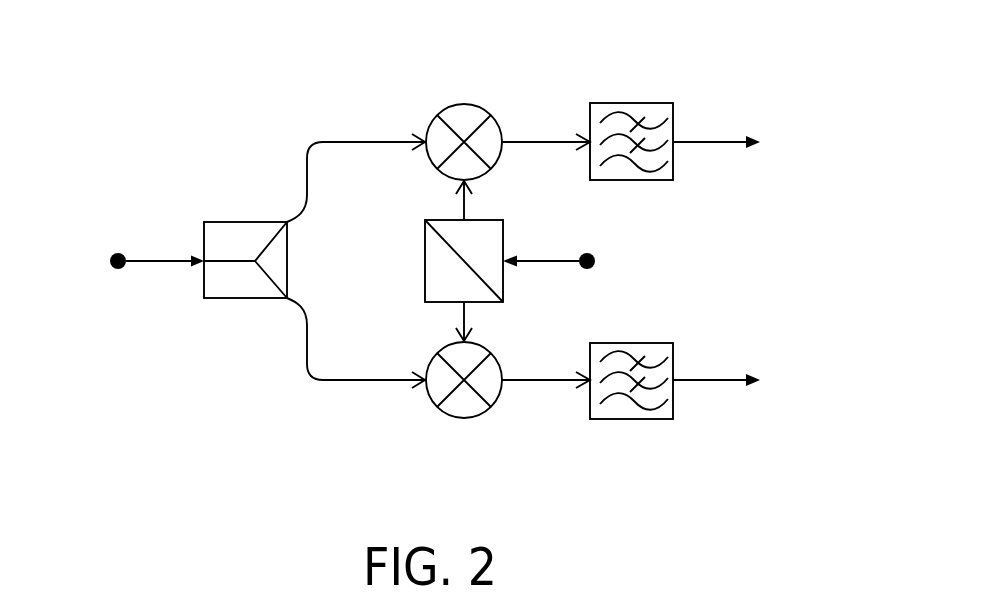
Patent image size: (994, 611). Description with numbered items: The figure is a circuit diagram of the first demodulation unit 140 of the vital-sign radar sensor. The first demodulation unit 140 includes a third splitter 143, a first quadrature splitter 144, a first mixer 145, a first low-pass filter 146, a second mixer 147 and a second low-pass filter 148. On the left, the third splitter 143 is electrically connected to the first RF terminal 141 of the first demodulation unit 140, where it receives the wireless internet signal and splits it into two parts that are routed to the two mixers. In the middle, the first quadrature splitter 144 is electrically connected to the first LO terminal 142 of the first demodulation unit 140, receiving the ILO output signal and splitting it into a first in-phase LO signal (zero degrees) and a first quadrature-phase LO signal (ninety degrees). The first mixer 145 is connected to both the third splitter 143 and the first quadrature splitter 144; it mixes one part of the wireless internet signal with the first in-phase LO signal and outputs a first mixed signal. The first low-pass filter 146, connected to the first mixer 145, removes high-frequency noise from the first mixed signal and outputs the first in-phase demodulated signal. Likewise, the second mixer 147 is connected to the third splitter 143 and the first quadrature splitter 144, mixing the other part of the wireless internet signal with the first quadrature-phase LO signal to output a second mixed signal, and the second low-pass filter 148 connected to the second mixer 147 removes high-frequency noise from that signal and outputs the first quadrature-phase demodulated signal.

The first demodulation unit 140 is at (129, 106).
The first RF terminal 141 is at (118, 252).
The first LO terminal 142 is at (580, 255).
The third splitter 143 is at (247, 222).
The first quadrature splitter 144 is at (425, 260).
The first mixer 145 is at (465, 103).
The first low-pass filter 146 is at (630, 103).
The second mixer 147 is at (463, 420).
The second low-pass filter 148 is at (630, 418).